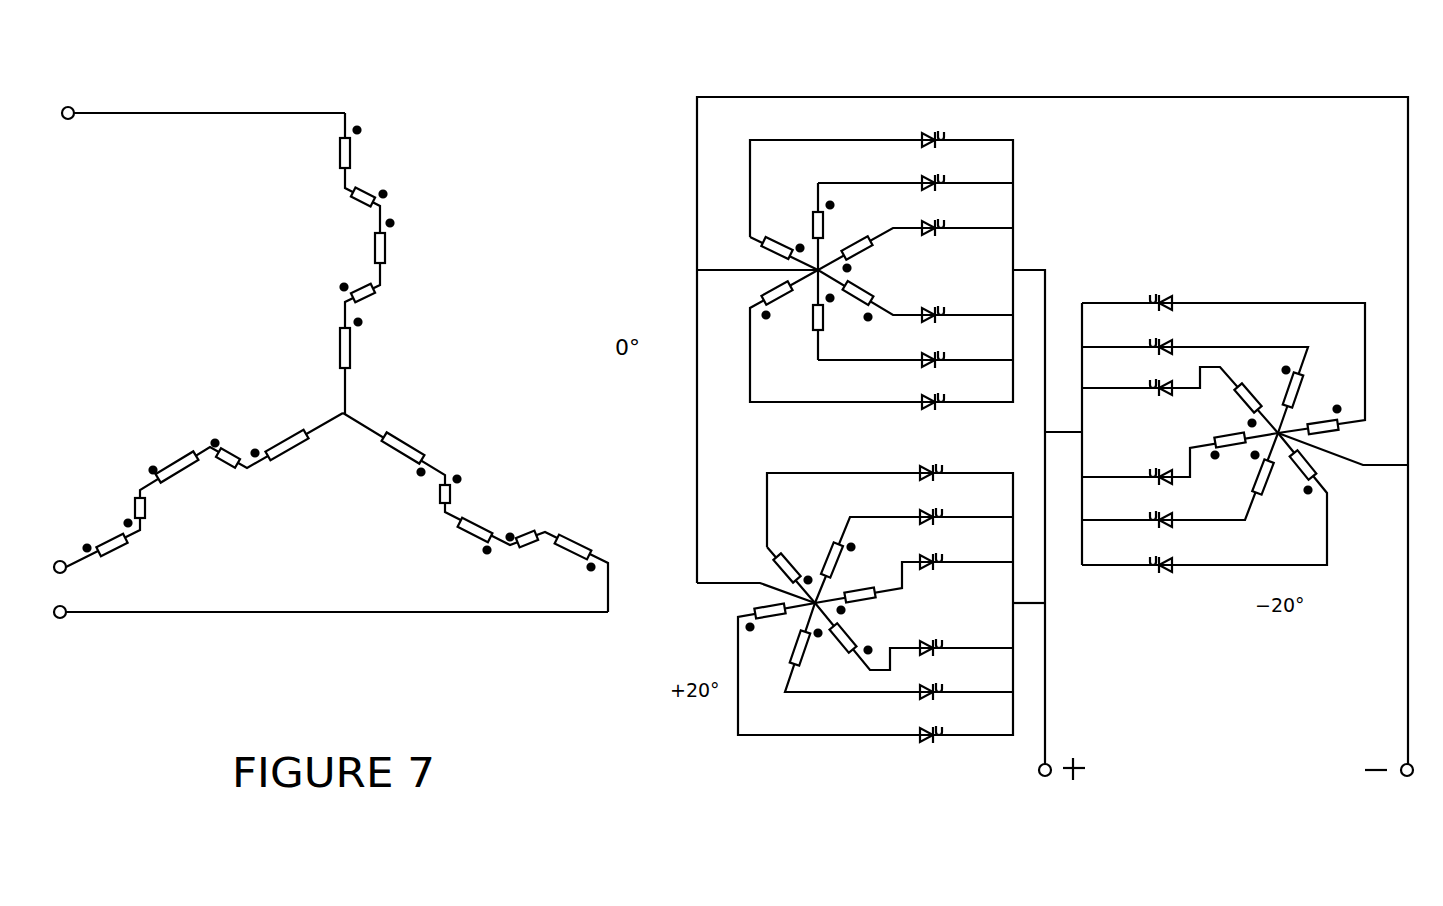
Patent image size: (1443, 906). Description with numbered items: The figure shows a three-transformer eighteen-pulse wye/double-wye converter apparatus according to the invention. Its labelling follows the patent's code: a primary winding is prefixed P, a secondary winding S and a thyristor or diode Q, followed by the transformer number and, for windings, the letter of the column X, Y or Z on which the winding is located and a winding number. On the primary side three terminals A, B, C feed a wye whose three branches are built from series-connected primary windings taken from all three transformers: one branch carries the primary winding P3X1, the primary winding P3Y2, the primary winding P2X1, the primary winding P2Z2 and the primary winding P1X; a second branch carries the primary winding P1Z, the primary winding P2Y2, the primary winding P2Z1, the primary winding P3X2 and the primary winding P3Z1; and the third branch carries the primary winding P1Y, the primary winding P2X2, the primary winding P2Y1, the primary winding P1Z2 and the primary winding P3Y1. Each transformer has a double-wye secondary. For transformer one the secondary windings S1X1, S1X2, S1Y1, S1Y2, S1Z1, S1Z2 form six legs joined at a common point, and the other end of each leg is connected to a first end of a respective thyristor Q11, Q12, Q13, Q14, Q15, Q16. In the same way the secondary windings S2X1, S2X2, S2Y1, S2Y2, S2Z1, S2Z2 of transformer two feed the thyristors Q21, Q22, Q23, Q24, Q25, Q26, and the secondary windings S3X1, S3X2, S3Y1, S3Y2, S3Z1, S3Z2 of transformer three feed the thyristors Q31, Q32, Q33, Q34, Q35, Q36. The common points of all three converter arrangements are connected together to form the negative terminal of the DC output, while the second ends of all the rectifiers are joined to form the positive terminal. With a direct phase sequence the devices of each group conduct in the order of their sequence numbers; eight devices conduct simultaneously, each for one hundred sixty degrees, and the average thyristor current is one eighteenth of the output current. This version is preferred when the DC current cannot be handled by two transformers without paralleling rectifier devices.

The phase A input terminal A is at (191, 113).
The phase B input terminal B is at (318, 613).
The phase C input terminal C is at (47, 566).
The primary winding P1X is at (367, 344).
The primary winding P1Y is at (412, 450).
The primary winding P1Z is at (290, 450).
The primary winding P1Z2 is at (526, 553).
The primary winding P2X1 is at (408, 242).
The primary winding P2X2 is at (422, 492).
The primary winding P2Y1 is at (491, 530).
The primary winding P2Y2 is at (218, 466).
The primary winding P2Z1 is at (155, 464).
The primary winding P2Z2 is at (384, 298).
The primary winding P3X1 is at (372, 148).
The primary winding P3X2 is at (163, 512).
The primary winding P3Y1 is at (590, 546).
The primary winding P3Y2 is at (340, 202).
The primary winding P3Z1 is at (125, 553).
The secondary winding S1X1 is at (798, 219).
The secondary winding S1X2 is at (844, 324).
The secondary winding S1Y1 is at (879, 296).
The secondary winding S1Y2 is at (755, 250).
The secondary winding S1Z1 is at (750, 299).
The secondary winding S1Z2 is at (882, 253).
The secondary winding S2X1 is at (819, 551).
The secondary winding S2X2 is at (817, 659).
The secondary winding S2Y1 is at (865, 638).
The secondary winding S2Y2 is at (763, 568).
The secondary winding S2Z1 is at (740, 613).
The secondary winding S2Z2 is at (865, 591).
The secondary winding S3X1 is at (1320, 387).
The secondary winding S3X2 is at (1233, 479).
The secondary winding S3Y1 is at (1203, 440).
The secondary winding S3Y2 is at (1349, 429).
The secondary winding S3Z1 is at (1335, 473).
The secondary winding S3Z2 is at (1222, 404).
The thyristor Q11 is at (954, 176).
The thyristor Q12 is at (954, 221).
The thyristor Q13 is at (954, 308).
The thyristor Q14 is at (954, 353).
The thyristor Q15 is at (954, 395).
The thyristor Q16 is at (954, 133).
The thyristor Q21 is at (951, 510).
The thyristor Q22 is at (951, 555).
The thyristor Q23 is at (951, 641).
The thyristor Q24 is at (951, 685).
The thyristor Q25 is at (951, 728).
The thyristor Q26 is at (951, 466).
The thyristor Q31 is at (1138, 340).
The thyristor Q32 is at (1138, 382).
The thyristor Q33 is at (1138, 470).
The thyristor Q34 is at (1138, 513).
The thyristor Q35 is at (1138, 558).
The thyristor Q36 is at (1138, 297).